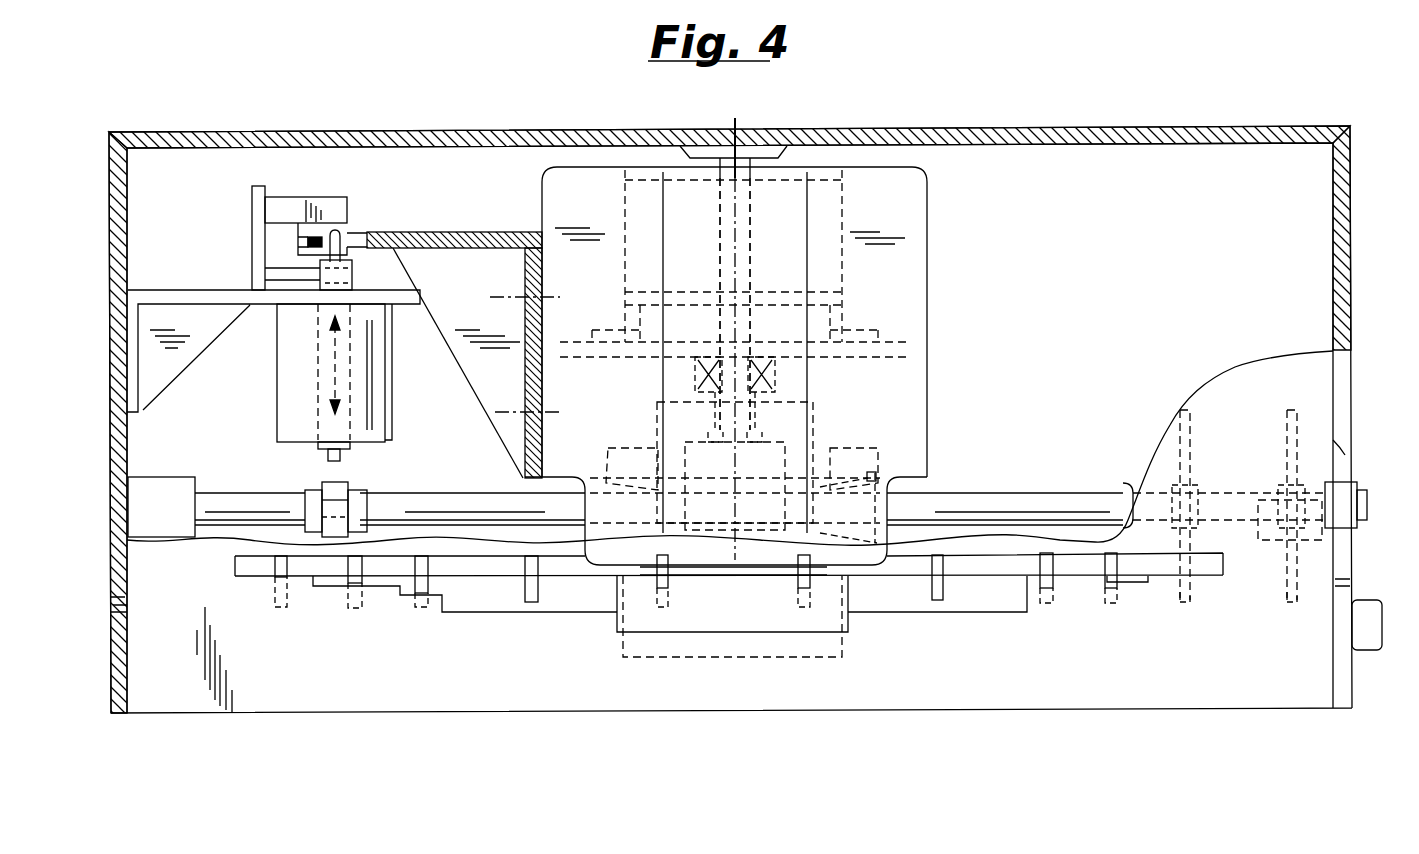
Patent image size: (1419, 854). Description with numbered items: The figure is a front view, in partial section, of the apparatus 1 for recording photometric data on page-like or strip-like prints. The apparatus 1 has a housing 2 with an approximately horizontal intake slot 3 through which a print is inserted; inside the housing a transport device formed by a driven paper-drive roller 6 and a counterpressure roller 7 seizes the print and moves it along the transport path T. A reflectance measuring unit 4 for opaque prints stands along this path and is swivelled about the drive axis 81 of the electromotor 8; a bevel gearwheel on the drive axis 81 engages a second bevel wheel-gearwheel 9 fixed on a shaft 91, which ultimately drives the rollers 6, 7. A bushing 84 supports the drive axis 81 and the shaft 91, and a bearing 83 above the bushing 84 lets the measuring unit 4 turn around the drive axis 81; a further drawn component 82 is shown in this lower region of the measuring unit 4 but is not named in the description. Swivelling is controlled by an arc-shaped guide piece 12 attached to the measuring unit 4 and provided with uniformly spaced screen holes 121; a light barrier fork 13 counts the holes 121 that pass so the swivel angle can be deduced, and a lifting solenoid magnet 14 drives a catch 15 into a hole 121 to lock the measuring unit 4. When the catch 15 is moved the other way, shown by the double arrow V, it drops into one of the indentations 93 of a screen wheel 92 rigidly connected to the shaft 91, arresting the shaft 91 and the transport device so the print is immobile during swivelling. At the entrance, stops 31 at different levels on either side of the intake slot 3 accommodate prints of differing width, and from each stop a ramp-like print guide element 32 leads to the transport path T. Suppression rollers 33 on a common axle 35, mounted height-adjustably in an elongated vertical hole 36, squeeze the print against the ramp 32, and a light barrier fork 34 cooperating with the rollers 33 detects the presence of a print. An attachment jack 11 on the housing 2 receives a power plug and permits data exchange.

The apparatus 1 is at (1045, 117).
The housing 2 is at (1186, 127).
The intake slot 3 is at (583, 600).
The reflectance measuring unit 4 is at (935, 325).
The paper-drive roller 6 is at (765, 648).
The counterpressure roller 7 is at (722, 572).
The electromotor 8 is at (833, 220).
The second bevel wheel-gearwheel 9 is at (875, 473).
The attachment jack 11 is at (1365, 638).
The arc-shaped guide piece 12 is at (447, 238).
The screen holes 121 is at (345, 240).
The light barrier fork 13 is at (297, 206).
The lifting solenoid magnet 14 is at (292, 392).
The catch 15 is at (330, 273).
The stops 31 is at (238, 564).
The print guide element 32 is at (690, 616).
The suppression rollers 33 is at (285, 612).
The light barrier fork 34 is at (1270, 535).
The common axle 35 is at (1223, 507).
The vertical hole 36 is at (1345, 452).
The drive axis 81 is at (727, 252).
The clamping device 82 is at (828, 457).
The bearing 83 is at (770, 372).
The bushing 84 is at (693, 467).
The shaft 91 is at (484, 505).
The screen wheel 92 is at (358, 493).
The indentations 93 is at (330, 513).
The transport path T is at (982, 573).
The double arrow V is at (333, 362).